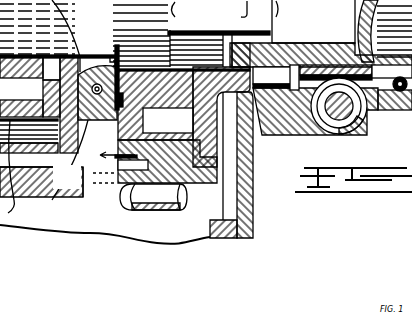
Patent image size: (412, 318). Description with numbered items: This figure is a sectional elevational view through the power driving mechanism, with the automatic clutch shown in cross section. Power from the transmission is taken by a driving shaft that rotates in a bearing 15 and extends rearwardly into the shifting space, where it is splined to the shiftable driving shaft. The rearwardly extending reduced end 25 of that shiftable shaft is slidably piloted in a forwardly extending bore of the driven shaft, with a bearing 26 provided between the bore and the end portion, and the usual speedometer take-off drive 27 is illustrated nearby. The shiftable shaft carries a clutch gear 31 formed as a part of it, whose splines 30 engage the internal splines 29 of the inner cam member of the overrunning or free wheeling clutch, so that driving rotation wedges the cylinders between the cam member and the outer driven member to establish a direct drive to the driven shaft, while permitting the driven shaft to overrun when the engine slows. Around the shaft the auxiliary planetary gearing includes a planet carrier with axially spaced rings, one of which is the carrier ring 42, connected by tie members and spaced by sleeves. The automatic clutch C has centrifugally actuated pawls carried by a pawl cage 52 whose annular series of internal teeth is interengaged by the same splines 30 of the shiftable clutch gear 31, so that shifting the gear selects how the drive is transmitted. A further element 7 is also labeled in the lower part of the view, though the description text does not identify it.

The clutch gear 31 is at (40, 28).
The splines 30 is at (112, 14).
The pawl cage 52 is at (116, 57).
The planetary carrier ring 42 is at (43, 96).
The internal splines 29 is at (223, 18).
The bearing 26 is at (201, 39).
The reduced end 25 is at (352, 13).
The speedometer take-off drive 27 is at (318, 135).
The bearing 15 is at (84, 177).
The pin 7 is at (111, 188).
The clutch C is at (105, 226).